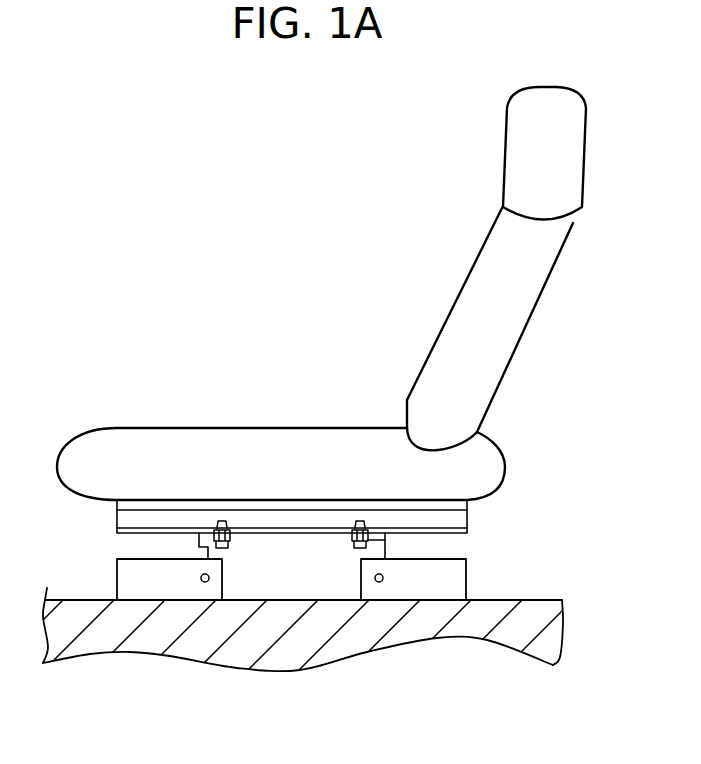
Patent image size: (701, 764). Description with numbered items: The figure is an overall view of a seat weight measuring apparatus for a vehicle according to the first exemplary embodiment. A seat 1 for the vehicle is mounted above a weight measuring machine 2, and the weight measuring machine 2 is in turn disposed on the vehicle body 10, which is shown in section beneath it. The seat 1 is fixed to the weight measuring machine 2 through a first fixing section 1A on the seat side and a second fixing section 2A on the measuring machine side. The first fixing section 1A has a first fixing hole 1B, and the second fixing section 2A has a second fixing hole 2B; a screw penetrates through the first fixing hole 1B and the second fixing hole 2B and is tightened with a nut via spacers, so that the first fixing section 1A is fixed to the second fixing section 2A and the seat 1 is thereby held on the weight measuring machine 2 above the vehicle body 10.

The seat 1 is at (247, 457).
The first fixing section 1A is at (171, 515).
The first fixing hole 1B is at (226, 527).
The weight measuring machine 2 is at (137, 592).
The second fixing section 2A is at (206, 552).
The second fixing hole 2B is at (232, 540).
The vehicle body 10 is at (307, 640).